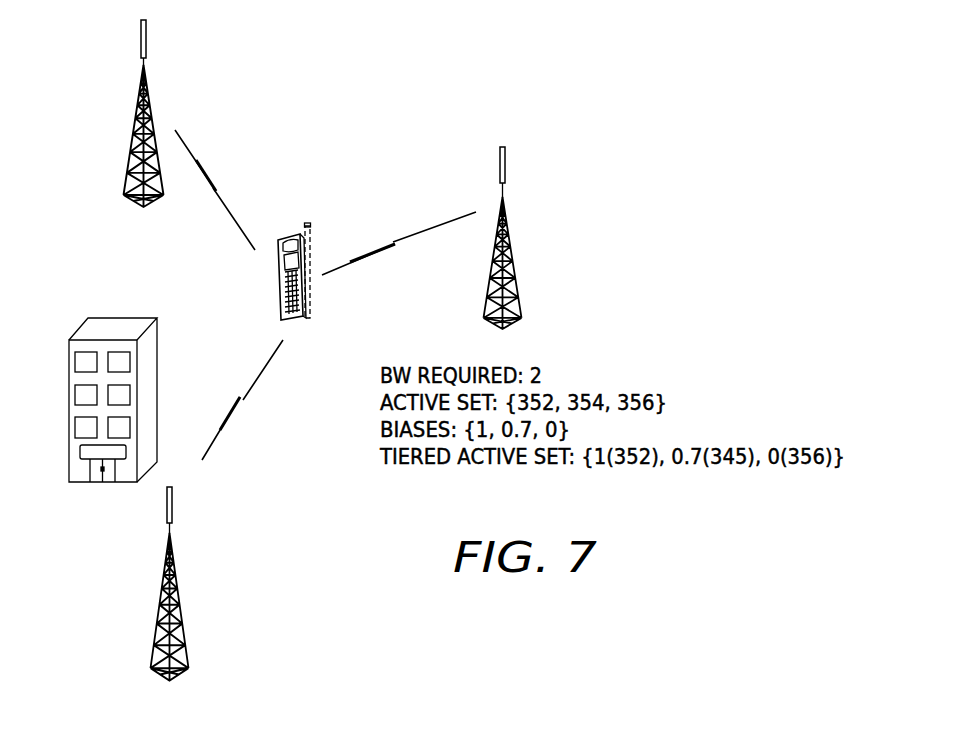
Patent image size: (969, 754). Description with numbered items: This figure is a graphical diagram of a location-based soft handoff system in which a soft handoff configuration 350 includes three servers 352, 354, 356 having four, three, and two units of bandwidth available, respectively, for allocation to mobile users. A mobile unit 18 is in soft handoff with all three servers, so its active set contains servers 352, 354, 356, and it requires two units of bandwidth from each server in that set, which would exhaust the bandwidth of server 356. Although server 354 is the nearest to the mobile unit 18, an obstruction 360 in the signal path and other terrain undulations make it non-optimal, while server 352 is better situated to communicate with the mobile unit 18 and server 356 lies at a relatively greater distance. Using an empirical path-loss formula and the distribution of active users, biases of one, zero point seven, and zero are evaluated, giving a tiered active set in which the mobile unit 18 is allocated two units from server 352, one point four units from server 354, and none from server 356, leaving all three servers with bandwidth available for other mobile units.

The mobile unit 18 is at (282, 300).
The soft handoff configuration 350 is at (724, 173).
The server 352 is at (505, 167).
The server 354 is at (173, 505).
The server 356 is at (146, 40).
The obstruction 360 is at (113, 328).